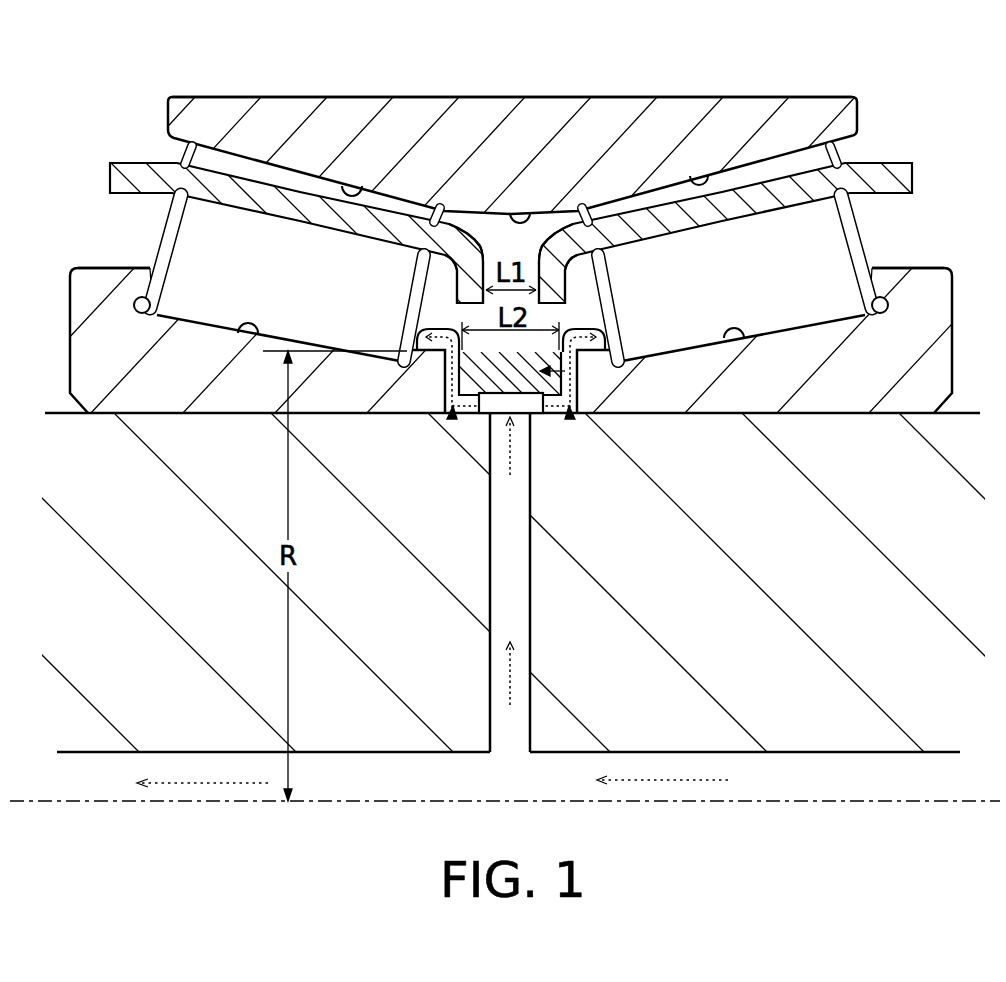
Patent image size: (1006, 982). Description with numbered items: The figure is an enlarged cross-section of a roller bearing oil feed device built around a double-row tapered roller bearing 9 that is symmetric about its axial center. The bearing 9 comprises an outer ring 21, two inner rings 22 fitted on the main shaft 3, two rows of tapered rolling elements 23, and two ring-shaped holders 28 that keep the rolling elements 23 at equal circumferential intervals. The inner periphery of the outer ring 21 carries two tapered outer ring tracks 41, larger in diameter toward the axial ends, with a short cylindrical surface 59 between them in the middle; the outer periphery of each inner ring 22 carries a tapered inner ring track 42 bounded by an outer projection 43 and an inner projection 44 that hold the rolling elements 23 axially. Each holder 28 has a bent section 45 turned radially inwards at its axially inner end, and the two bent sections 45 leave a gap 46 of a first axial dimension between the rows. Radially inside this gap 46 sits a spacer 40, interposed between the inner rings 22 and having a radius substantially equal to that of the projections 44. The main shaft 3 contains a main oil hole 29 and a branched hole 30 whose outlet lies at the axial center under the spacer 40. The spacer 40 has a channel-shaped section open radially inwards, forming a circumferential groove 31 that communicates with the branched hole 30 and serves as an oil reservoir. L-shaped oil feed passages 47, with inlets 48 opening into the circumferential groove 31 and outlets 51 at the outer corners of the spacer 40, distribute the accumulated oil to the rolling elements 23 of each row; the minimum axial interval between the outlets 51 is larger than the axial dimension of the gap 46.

The roller bearing 9 is at (448, 80).
The outer ring 21 is at (555, 97).
The outer ring track 41 is at (352, 194).
The gap 46 is at (508, 240).
The cylindrical surface 59 is at (522, 218).
The holder 28 is at (297, 210).
The projection 43 is at (140, 282).
The bent section 45 is at (458, 280).
The outlet 51 is at (400, 330).
The rolling elements 23 is at (160, 316).
The inner ring track 42 is at (245, 330).
The inner ring 22 is at (236, 390).
The projection 44 is at (433, 370).
The spacer 40 is at (583, 403).
The oil feed passage 47 is at (450, 417).
The inlet 48 is at (477, 417).
The circumferential groove 31 is at (505, 416).
The branched hole 30 is at (520, 582).
The main shaft 3 is at (815, 586).
The main oil hole 29 is at (805, 767).